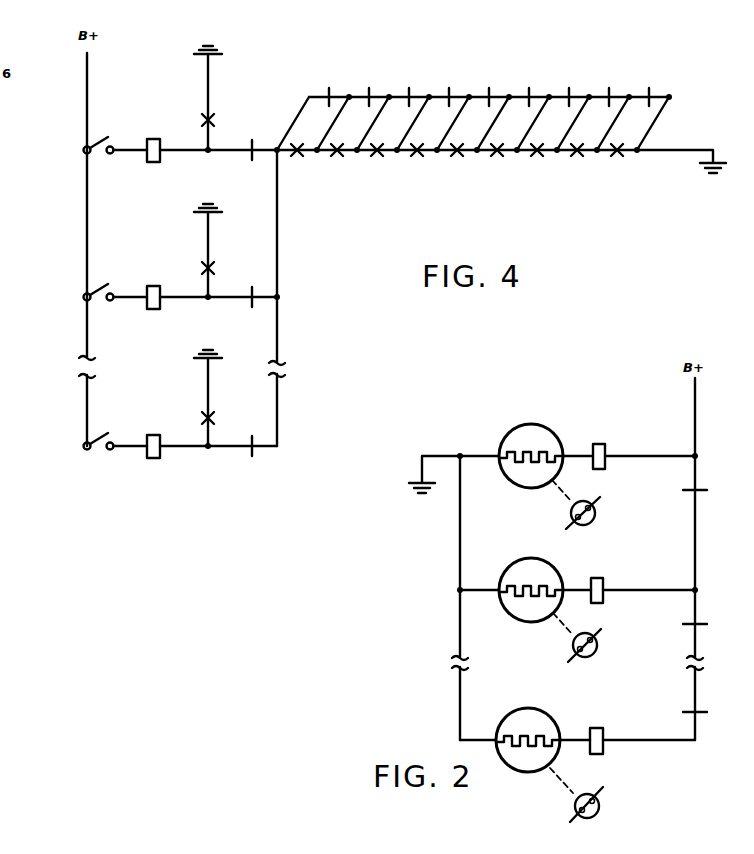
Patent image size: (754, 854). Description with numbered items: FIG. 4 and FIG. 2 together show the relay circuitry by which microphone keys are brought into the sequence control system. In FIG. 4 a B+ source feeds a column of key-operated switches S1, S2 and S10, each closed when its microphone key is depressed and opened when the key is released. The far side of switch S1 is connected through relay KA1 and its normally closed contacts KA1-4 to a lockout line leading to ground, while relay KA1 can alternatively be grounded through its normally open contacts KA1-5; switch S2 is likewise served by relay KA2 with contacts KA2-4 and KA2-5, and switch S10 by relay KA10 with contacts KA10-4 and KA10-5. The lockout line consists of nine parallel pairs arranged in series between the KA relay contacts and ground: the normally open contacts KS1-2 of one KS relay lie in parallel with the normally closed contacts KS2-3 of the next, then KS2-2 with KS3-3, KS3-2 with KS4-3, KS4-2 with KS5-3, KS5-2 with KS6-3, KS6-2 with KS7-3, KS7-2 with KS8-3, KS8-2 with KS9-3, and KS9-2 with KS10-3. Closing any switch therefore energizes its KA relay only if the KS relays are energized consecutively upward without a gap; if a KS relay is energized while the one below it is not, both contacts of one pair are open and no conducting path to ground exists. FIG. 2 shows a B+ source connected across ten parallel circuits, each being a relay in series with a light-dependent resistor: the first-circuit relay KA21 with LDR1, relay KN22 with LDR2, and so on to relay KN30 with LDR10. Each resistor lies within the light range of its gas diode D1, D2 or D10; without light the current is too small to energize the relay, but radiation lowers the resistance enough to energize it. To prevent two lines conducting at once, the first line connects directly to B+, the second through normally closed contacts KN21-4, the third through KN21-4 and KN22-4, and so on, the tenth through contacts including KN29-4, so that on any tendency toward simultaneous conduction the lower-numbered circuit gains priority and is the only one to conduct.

In FIG. 4, the switch S1 is at (83, 148).
In FIG. 4, the switch S2 is at (83, 295).
In FIG. 4, the switch S10 is at (76, 444).
In FIG. 4, the relay KA1 is at (154, 159).
In FIG. 4, the relay KA2 is at (154, 307).
In FIG. 4, the relay KA10 is at (154, 457).
In FIG. 4, the normally open contacts KA1-5 is at (182, 121).
In FIG. 4, the normally open contacts KA2-5 is at (182, 268).
In FIG. 4, the normally open contacts KA10-5 is at (175, 416).
In FIG. 4, the normally closed contacts KA1-4 is at (250, 159).
In FIG. 4, the normally closed contacts KA2-4 is at (250, 308).
In FIG. 4, the normally closed contacts KA10-4 is at (251, 458).
In FIG. 4, the normally open contacts KS1-2 is at (298, 158).
In FIG. 4, the normally open contacts KS2-2 is at (338, 158).
In FIG. 4, the normally open contacts KS3-2 is at (378, 158).
In FIG. 4, the normally open contacts KS4-2 is at (418, 158).
In FIG. 4, the normally open contacts KS5-2 is at (458, 158).
In FIG. 4, the normally open contacts KS6-2 is at (498, 158).
In FIG. 4, the normally open contacts KS7-2 is at (538, 158).
In FIG. 4, the normally open contacts KS8-2 is at (578, 158).
In FIG. 4, the normally open contacts KS9-2 is at (618, 158).
In FIG. 4, the normally closed contacts KS2-3 is at (326, 88).
In FIG. 4, the normally closed contacts KS3-3 is at (365, 89).
In FIG. 4, the normally closed contacts KS4-3 is at (406, 88).
In FIG. 4, the normally closed contacts KS5-3 is at (445, 89).
In FIG. 4, the normally closed contacts KS6-3 is at (486, 88).
In FIG. 4, the normally closed contacts KS7-3 is at (525, 89).
In FIG. 4, the normally closed contacts KS8-3 is at (566, 88).
In FIG. 4, the normally closed contacts KS9-3 is at (605, 89).
In FIG. 4, the normally closed contacts KS10-3 is at (646, 88).
In FIG. 2, the light-dependent resistor LDR1 is at (523, 449).
In FIG. 2, the light-dependent resistor LDR2 is at (520, 582).
In FIG. 2, the light-dependent resistor LDR10 is at (516, 733).
In FIG. 2, the first-circuit relay KA21 is at (601, 447).
In FIG. 2, the relay KN22 is at (606, 583).
In FIG. 2, the relay KN30 is at (607, 752).
In FIG. 2, the normally closed contacts KN21-4 is at (657, 490).
In FIG. 2, the normally closed contacts KN22-4 is at (653, 623).
In FIG. 2, the normally closed contacts KN29-4 is at (647, 717).
In FIG. 2, the gas diode D1 is at (585, 504).
In FIG. 2, the gas diode D2 is at (586, 638).
In FIG. 2, the gas diode D10 is at (591, 795).